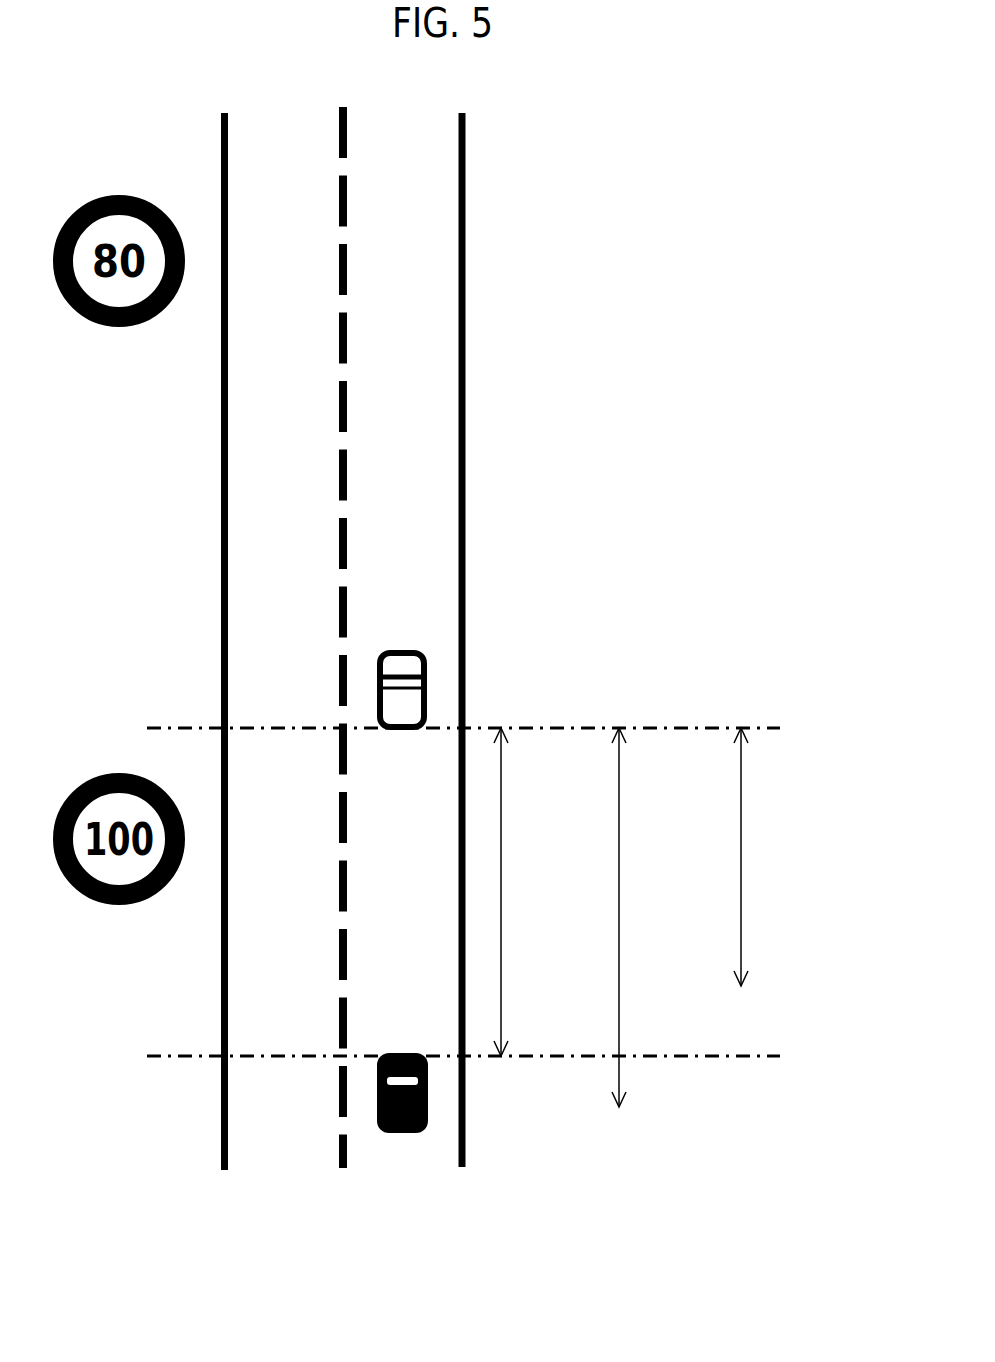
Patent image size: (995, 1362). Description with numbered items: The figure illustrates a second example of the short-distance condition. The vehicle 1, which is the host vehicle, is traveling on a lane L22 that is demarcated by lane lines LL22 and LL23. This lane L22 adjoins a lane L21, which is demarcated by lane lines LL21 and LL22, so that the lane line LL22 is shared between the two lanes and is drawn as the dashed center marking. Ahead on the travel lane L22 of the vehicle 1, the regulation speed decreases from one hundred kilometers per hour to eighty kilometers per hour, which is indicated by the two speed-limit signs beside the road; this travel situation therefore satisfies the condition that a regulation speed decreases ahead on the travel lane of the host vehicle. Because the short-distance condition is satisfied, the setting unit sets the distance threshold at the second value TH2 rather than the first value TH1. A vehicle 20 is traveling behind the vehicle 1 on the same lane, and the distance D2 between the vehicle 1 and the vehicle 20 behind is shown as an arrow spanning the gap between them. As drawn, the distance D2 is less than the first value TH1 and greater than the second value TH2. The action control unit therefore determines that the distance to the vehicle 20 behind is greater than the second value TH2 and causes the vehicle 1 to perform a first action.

The vehicle 1 is at (380, 692).
The vehicle behind 20 is at (380, 1093).
The lane line LL21 is at (224, 1170).
The lane line LL22 is at (343, 1168).
The lane line LL23 is at (462, 1167).
The lane L21 is at (292, 1168).
The lane L22 is at (410, 1168).
The distance D2 is at (501, 930).
The first value TH1 is at (619, 925).
The second value TH2 is at (741, 924).